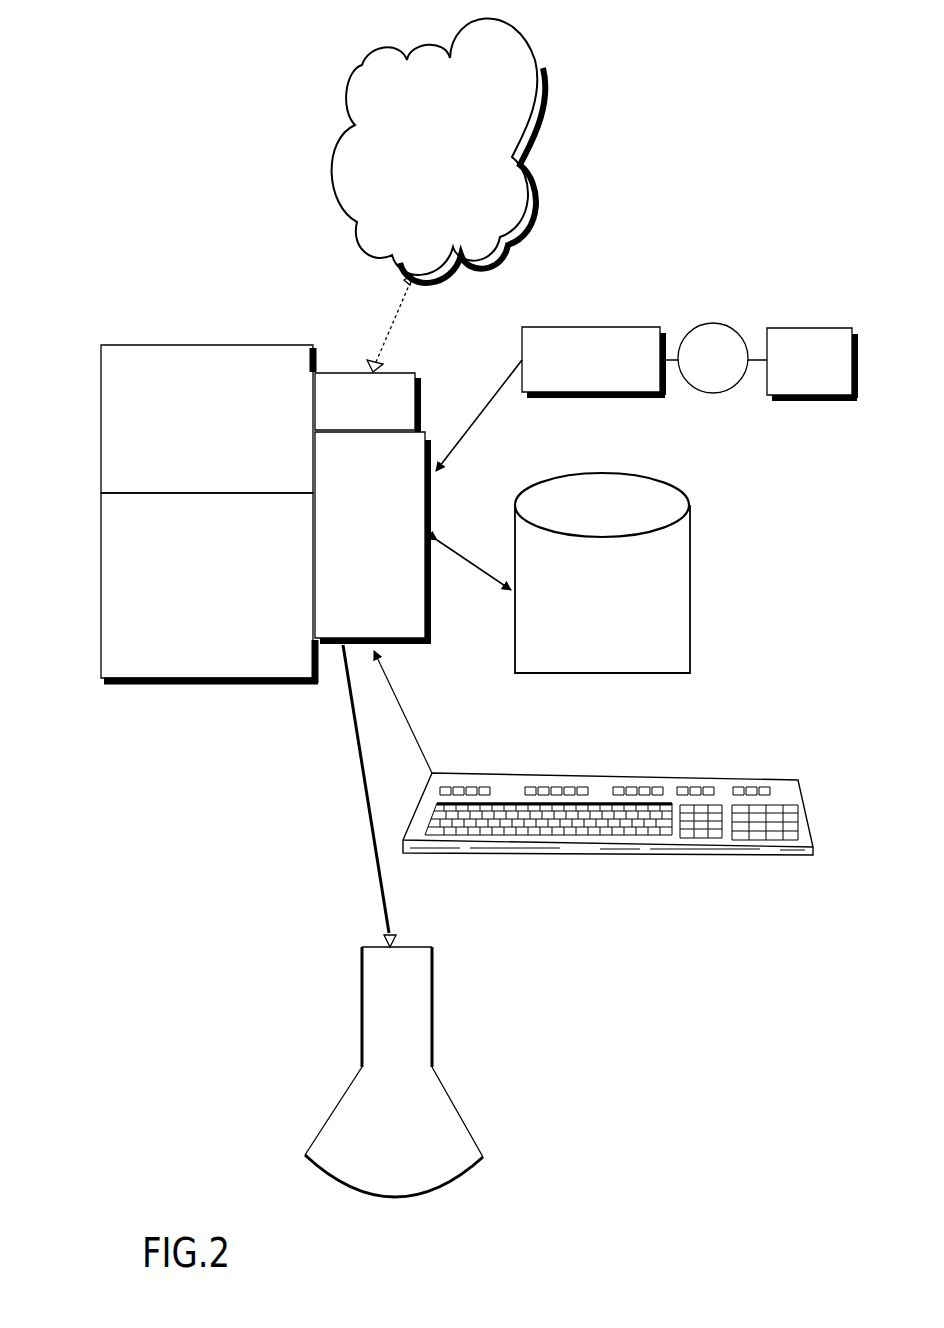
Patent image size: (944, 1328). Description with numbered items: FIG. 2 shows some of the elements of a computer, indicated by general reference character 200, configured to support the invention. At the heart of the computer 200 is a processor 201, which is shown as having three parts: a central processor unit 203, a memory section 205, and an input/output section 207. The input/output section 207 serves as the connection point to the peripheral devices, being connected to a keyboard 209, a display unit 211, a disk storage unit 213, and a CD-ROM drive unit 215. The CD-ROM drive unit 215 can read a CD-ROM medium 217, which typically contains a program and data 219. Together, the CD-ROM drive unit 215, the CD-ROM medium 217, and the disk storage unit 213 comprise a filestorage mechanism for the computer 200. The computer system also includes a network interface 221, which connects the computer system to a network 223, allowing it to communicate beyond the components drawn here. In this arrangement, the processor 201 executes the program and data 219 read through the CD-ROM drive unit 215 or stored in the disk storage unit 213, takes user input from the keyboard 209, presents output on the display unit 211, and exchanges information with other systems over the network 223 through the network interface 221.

The computer 200 is at (172, 803).
The processor 201 is at (98, 430).
The central processor unit 203 is at (227, 447).
The memory section 205 is at (224, 597).
The input/output section 207 is at (388, 472).
The keyboard 209 is at (717, 778).
The display unit 211 is at (414, 1133).
The disk storage unit 213 is at (621, 597).
The CD-ROM drive unit 215 is at (609, 363).
The CD-ROM medium 217 is at (734, 370).
The program and data 219 is at (828, 365).
The network interface 221 is at (383, 410).
The network 223 is at (449, 160).